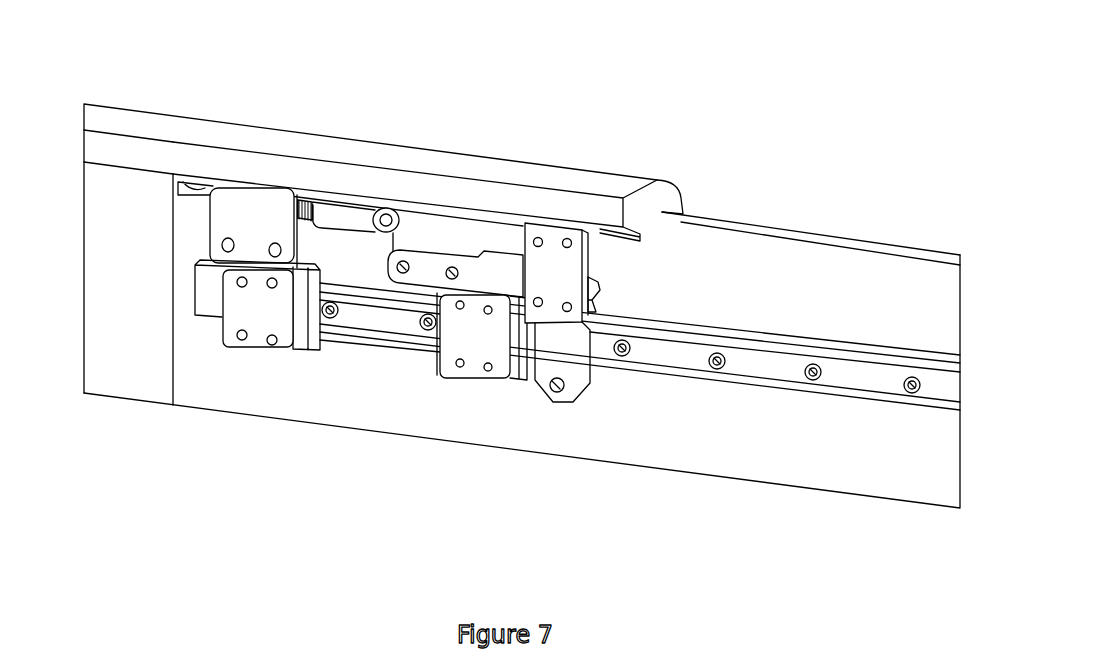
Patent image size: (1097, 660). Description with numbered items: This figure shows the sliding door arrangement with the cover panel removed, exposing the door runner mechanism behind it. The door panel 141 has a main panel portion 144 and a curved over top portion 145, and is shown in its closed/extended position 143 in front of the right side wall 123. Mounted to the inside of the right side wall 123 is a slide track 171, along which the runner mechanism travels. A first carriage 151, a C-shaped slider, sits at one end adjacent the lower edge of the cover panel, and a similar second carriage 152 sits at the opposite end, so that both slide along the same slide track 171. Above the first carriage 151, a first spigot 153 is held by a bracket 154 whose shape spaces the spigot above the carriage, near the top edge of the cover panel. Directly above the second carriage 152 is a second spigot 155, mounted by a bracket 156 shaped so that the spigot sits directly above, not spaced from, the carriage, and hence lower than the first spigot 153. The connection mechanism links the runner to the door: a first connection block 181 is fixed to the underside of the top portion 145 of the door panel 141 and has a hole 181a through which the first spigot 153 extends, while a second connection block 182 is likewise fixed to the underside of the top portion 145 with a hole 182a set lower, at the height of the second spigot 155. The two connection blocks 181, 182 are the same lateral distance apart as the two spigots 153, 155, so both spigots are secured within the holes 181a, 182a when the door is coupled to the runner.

The door panel 141 is at (68, 214).
The main panel portion 144 is at (507, 381).
The closed/extended position 143 is at (113, 377).
The curved over top portion 145 is at (490, 170).
The right side wall 123 is at (723, 257).
The second spigot 155 is at (665, 298).
The slide track 171 is at (762, 362).
The first spigot 153 is at (390, 258).
The bracket 154 is at (237, 205).
The first connection block 181 is at (338, 210).
The hole 181a is at (382, 208).
The bracket 156 is at (432, 268).
The first carriage 151 is at (257, 347).
The second carriage 152 is at (472, 364).
The second connection block 182 is at (597, 253).
The hole 182a is at (603, 315).